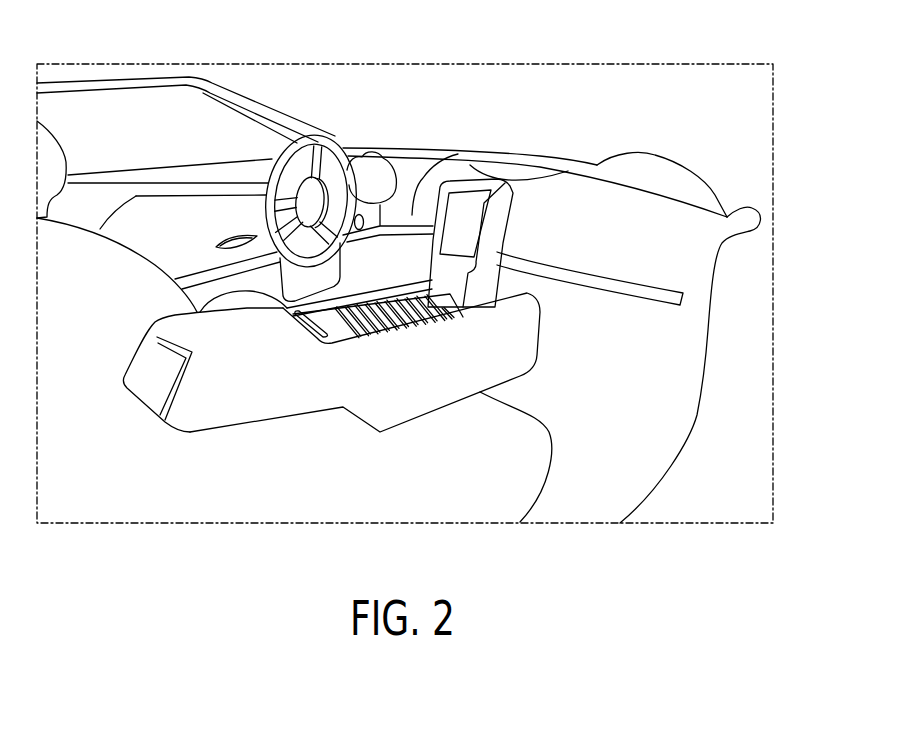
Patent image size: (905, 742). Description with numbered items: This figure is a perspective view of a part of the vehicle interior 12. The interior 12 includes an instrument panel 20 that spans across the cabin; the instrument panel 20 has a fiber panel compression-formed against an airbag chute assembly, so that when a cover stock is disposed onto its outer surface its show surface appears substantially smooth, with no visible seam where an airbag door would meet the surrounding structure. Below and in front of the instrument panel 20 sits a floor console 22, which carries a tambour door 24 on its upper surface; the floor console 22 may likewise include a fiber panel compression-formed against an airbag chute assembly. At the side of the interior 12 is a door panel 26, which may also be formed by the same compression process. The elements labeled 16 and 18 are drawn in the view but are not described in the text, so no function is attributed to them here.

The vehicle interior 12 is at (706, 111).
The center console 16 is at (190, 323).
The display unit 18 is at (478, 204).
The instrument panel 20 is at (690, 206).
The floor console 22 is at (511, 350).
The tambour door 24 is at (390, 313).
The door panel 26 is at (146, 210).